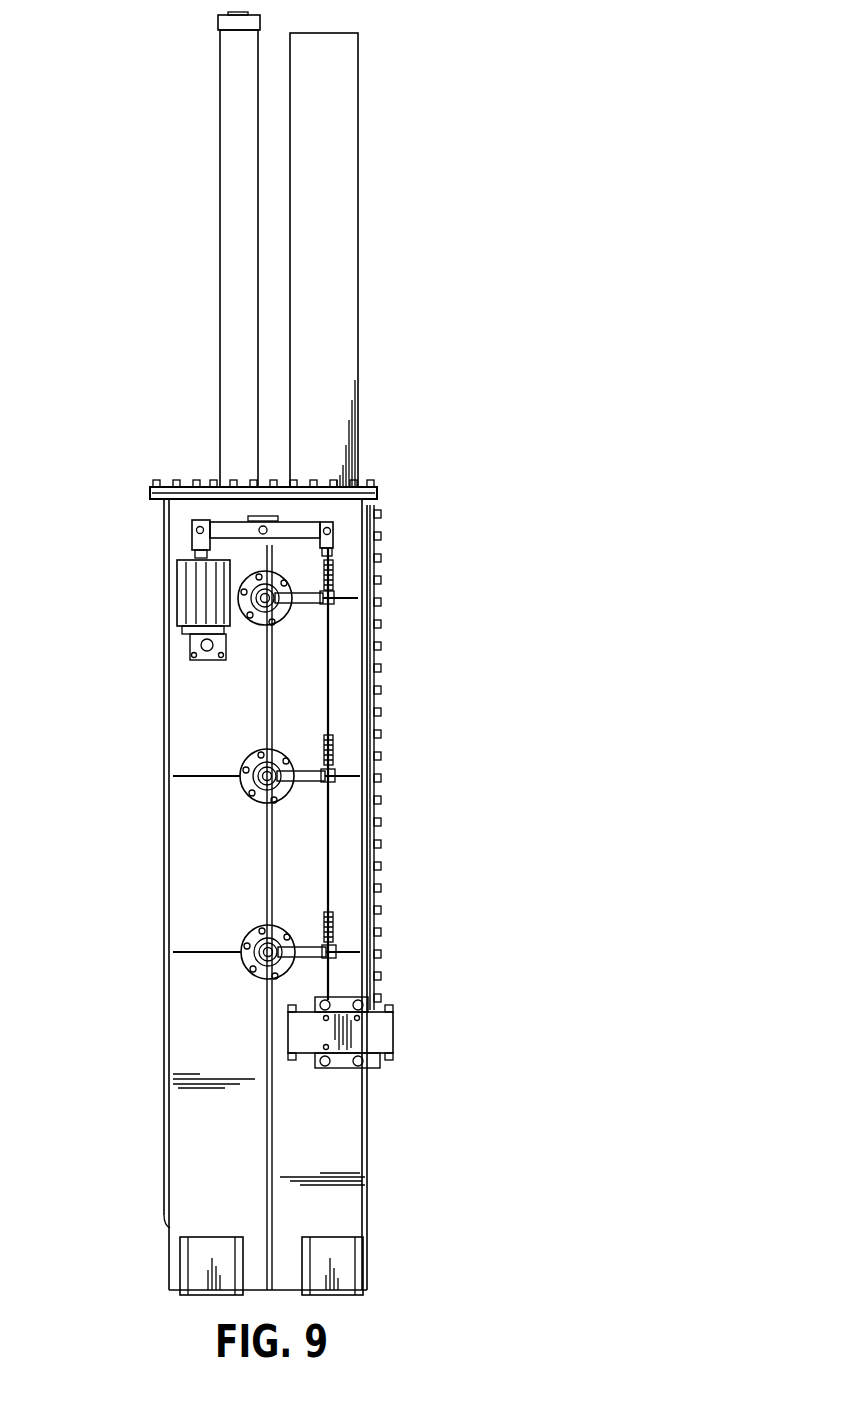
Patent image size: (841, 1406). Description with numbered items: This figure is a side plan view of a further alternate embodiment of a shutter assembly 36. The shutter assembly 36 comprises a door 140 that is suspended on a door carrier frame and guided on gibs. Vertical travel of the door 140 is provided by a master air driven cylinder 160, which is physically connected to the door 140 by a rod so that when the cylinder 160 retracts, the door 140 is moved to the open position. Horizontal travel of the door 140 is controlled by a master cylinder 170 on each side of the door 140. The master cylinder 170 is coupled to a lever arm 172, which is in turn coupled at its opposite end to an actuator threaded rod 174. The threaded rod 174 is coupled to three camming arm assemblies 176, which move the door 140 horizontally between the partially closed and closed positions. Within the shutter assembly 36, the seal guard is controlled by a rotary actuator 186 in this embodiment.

The shutter assembly 36 is at (430, 633).
The door 140 is at (350, 170).
The master air driven cylinder 160 is at (232, 323).
The master cylinder 170 is at (192, 590).
The lever arm 172 is at (298, 528).
The actuator threaded rod 174 is at (332, 694).
The camming arm assemblies 176 is at (260, 620).
The rotary actuator 186 is at (380, 1037).